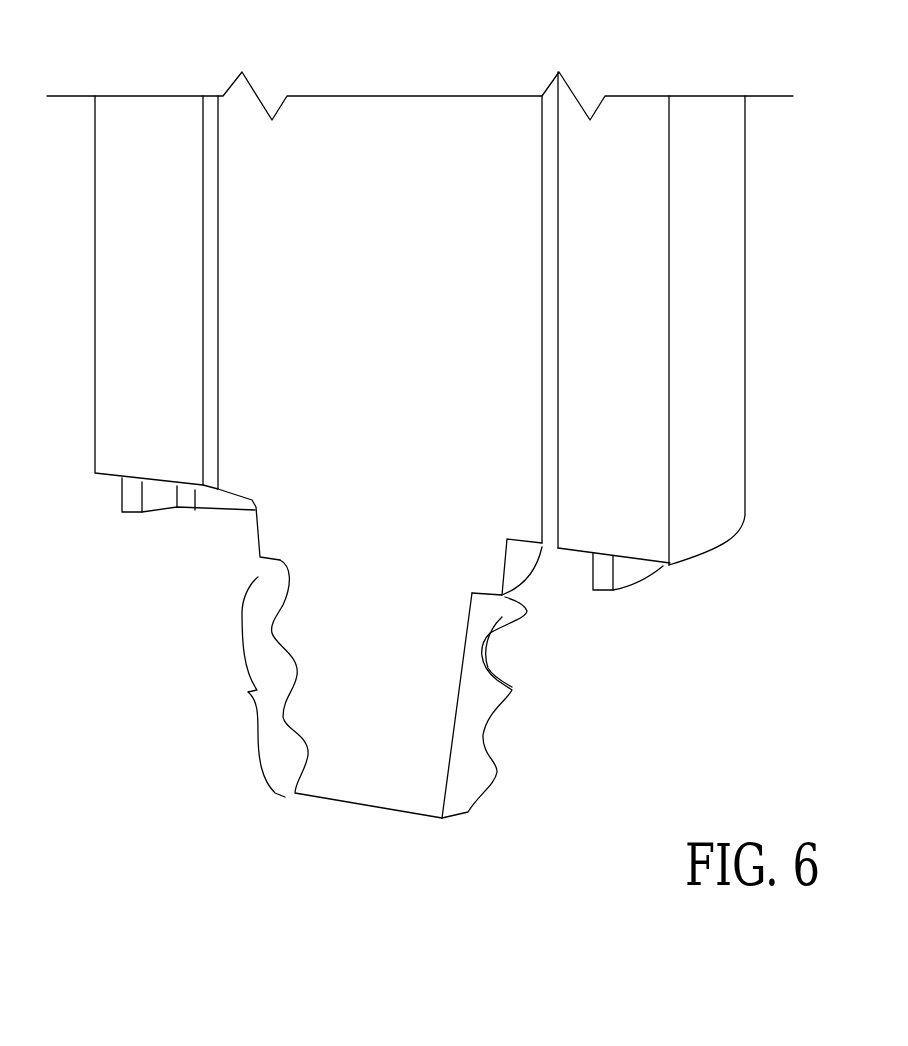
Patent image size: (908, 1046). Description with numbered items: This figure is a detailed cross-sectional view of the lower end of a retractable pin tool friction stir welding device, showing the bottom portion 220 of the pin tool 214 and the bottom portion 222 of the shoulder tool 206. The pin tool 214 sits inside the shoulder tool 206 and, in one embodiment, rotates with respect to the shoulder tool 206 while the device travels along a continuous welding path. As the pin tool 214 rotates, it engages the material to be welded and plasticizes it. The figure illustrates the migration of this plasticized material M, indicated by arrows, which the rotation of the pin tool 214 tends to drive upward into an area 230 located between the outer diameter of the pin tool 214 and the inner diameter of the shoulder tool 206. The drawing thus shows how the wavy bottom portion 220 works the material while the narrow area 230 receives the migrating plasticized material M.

The pin tool 214 is at (383, 120).
The area between pin tool and shoulder tool 230 is at (210, 112).
The shoulder tool 206 is at (745, 246).
The bottom portion of shoulder tool 222 is at (745, 410).
The bottom portion of pin tool 220 is at (366, 678).
The plasticized material M is at (209, 522).